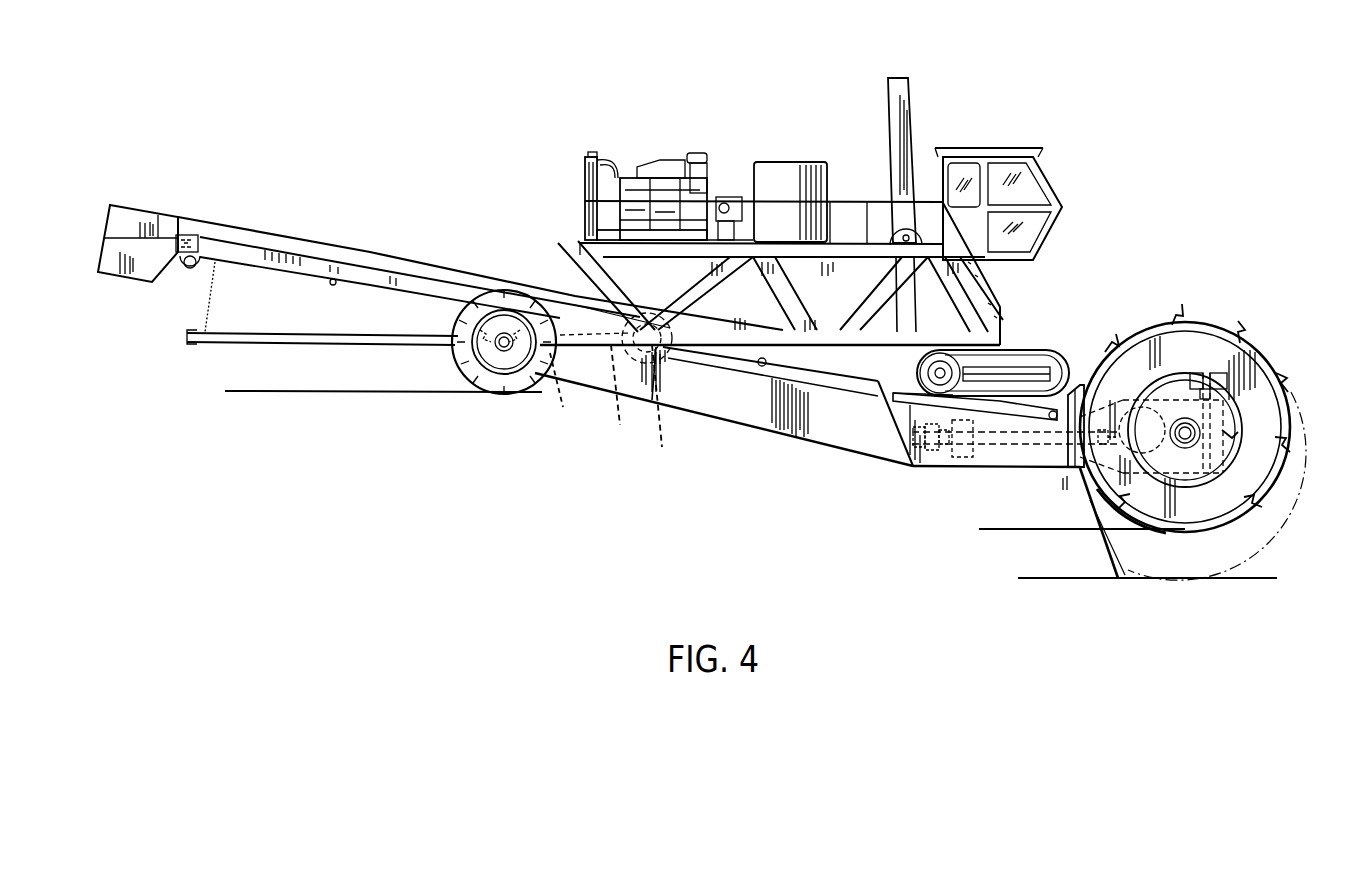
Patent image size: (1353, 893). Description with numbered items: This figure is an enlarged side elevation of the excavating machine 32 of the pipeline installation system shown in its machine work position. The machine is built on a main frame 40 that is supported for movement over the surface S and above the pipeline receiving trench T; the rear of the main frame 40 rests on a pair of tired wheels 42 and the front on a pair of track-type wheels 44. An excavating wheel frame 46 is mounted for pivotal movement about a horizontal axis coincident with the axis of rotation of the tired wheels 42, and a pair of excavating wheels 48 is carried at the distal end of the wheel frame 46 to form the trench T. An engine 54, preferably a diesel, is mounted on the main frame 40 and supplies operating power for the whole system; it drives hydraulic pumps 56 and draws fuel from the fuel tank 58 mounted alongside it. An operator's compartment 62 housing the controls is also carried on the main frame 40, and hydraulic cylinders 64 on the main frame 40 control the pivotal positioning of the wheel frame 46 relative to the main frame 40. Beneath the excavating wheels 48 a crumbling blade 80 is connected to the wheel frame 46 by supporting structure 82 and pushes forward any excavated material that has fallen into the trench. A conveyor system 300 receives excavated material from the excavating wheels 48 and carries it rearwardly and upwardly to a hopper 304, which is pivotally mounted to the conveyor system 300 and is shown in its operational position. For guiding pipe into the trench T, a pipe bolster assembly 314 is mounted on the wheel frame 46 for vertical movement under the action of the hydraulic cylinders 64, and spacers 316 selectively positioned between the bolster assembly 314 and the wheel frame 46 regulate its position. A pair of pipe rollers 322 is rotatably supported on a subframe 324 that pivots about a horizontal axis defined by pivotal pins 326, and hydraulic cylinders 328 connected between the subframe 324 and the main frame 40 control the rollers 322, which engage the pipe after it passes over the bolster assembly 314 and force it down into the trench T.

The excavating machine 32 is at (784, 128).
The main frame 40 is at (562, 248).
The tired wheels 42 is at (467, 353).
The track-type wheels 44 is at (1058, 350).
The excavating wheel frame 46 is at (767, 415).
The excavating wheels 48 is at (1236, 372).
The engine 54 is at (668, 152).
The hydraulic pumps 56 is at (748, 237).
The fuel tank 58 is at (800, 196).
The operator's compartment 62 is at (1072, 190).
The hydraulic cylinders 64 is at (910, 93).
The crumbling blade 80 is at (1123, 522).
The supporting structure 82 is at (1077, 460).
The conveyor system 300 is at (284, 224).
The hopper 304 is at (137, 216).
The pipe bolster assembly 314 is at (1210, 365).
The spacers 316 is at (1222, 432).
The pipe rollers 322 is at (671, 406).
The subframe 324 is at (623, 398).
The pivotal pins 326 is at (564, 392).
The hydraulic cylinders 328 is at (572, 283).
The surface S is at (255, 391).
The pipeline receiving trench T is at (1032, 553).